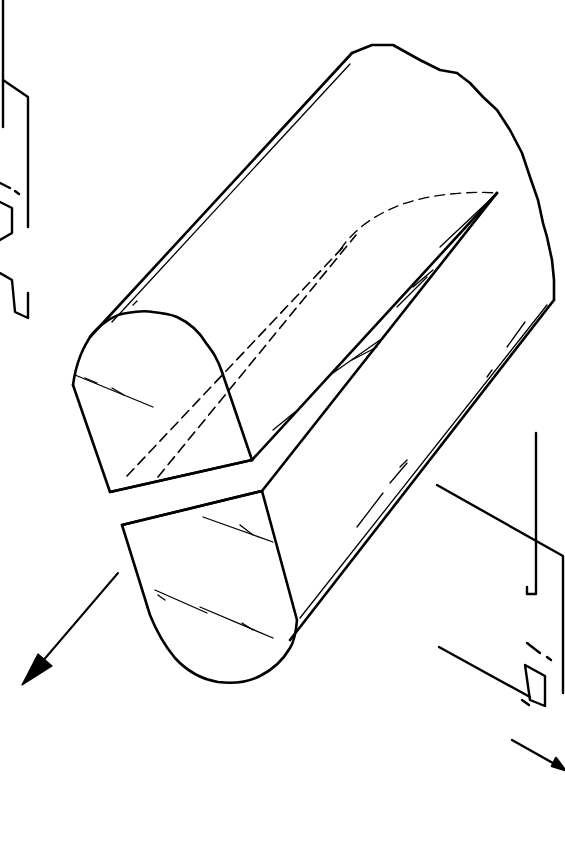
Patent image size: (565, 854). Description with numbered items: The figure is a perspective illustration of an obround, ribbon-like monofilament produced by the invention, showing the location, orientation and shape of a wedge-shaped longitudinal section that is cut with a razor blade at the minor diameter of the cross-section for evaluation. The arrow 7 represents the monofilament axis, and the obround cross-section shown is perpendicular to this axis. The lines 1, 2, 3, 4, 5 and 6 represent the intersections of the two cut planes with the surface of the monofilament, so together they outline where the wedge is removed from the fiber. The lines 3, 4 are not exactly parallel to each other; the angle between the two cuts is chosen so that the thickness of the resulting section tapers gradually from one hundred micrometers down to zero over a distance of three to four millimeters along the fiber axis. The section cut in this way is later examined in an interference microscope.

The line 1 is at (322, 378).
The line 2 is at (341, 391).
The line 3 is at (222, 463).
The line 4 is at (197, 510).
The line 5 is at (197, 395).
The line 6 is at (185, 444).
The arrow 7 is at (64, 641).